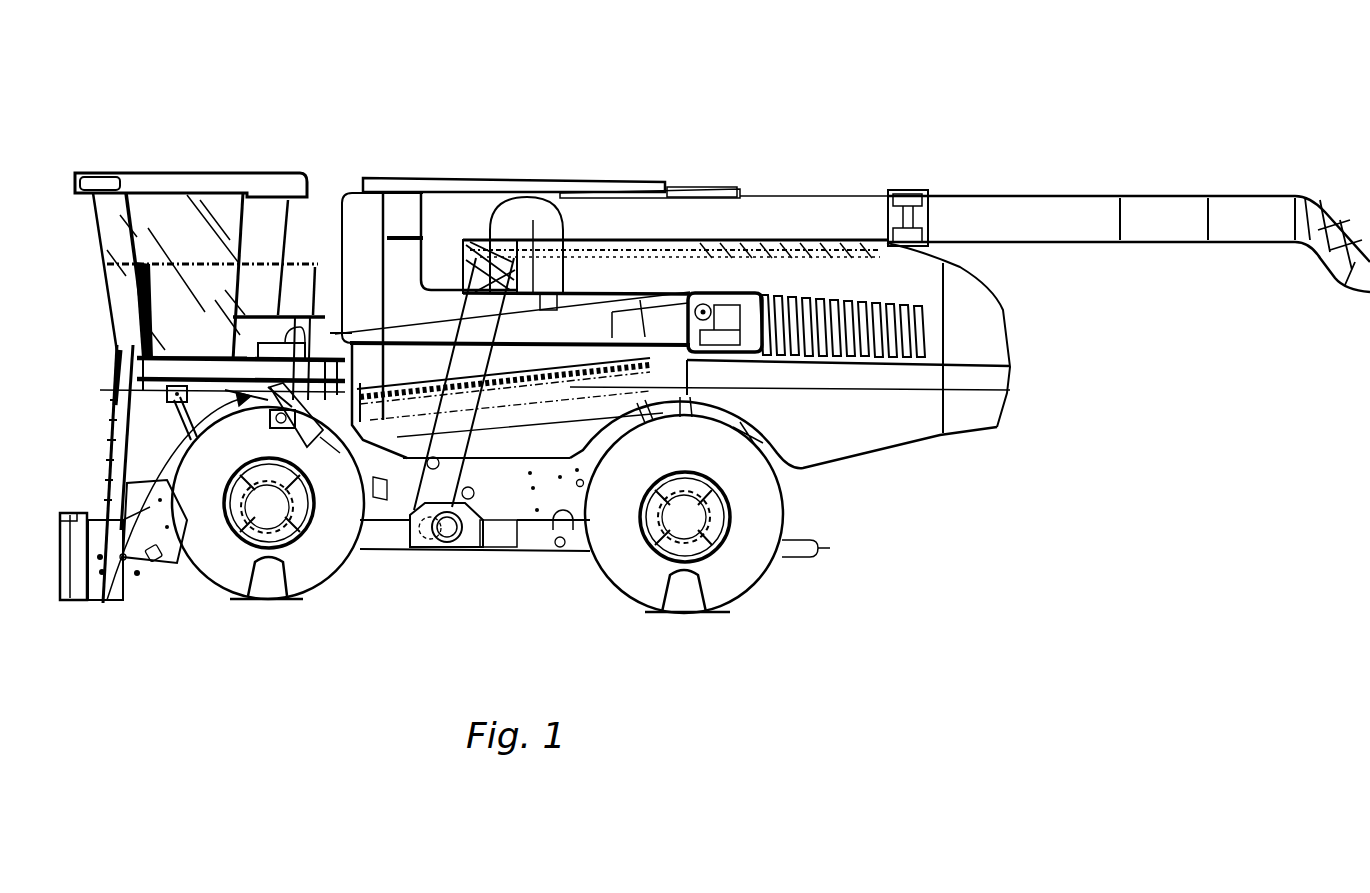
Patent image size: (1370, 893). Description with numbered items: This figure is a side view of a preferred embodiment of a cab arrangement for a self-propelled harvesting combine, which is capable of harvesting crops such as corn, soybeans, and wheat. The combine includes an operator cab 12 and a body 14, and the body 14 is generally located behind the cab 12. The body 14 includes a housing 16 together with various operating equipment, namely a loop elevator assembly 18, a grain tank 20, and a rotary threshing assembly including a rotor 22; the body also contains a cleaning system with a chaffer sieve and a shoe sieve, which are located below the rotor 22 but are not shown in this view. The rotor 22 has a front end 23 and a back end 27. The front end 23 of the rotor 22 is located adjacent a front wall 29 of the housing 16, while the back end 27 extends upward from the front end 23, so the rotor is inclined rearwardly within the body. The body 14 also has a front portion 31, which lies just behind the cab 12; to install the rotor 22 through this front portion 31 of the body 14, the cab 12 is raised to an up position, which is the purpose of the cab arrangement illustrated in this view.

The operator cab 12 is at (172, 160).
The body 14 is at (403, 163).
The housing 16 is at (773, 280).
The loop elevator assembly 18 is at (477, 258).
The grain tank 20 is at (520, 227).
The rotor 22 is at (570, 327).
The front end 23 is at (320, 438).
The back end 27 is at (758, 355).
The front wall 29 is at (342, 243).
The front portion 31 is at (105, 595).